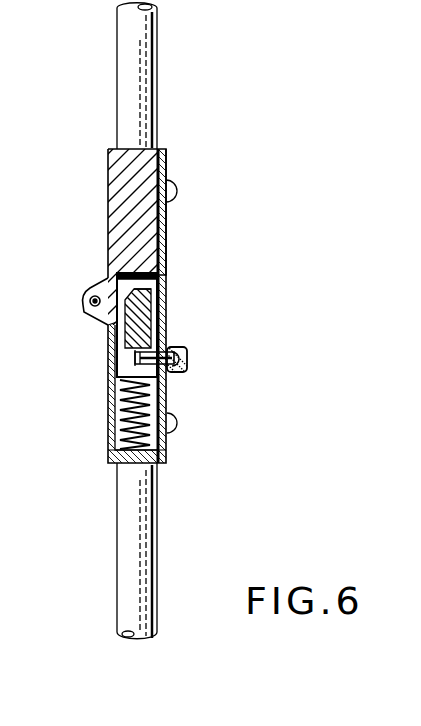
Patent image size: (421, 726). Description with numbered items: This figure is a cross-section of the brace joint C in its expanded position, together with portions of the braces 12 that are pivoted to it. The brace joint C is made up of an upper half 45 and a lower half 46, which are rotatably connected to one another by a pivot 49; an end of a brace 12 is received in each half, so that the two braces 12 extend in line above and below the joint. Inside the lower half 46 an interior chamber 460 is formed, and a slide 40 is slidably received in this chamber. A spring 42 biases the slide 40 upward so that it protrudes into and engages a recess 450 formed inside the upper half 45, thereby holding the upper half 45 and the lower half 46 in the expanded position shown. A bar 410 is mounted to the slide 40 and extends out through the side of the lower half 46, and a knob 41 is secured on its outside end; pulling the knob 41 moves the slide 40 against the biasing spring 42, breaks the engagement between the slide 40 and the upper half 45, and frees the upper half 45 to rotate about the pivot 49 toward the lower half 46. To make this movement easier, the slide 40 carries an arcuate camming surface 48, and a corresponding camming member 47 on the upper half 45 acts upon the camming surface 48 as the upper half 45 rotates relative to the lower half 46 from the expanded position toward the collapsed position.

The brace 12 is at (147, 79).
The upper half 45 is at (168, 162).
The arcuate camming surface 48 is at (162, 241).
The recess 450 is at (146, 291).
The slide 40 is at (143, 317).
The knob 41 is at (182, 346).
The bar 410 is at (171, 377).
The spring 42 is at (166, 398).
The interior chamber 460 is at (166, 452).
The lower half 46 is at (100, 440).
The camming member 47 is at (92, 318).
The pivot 49 is at (92, 296).
The brace joint C is at (88, 173).